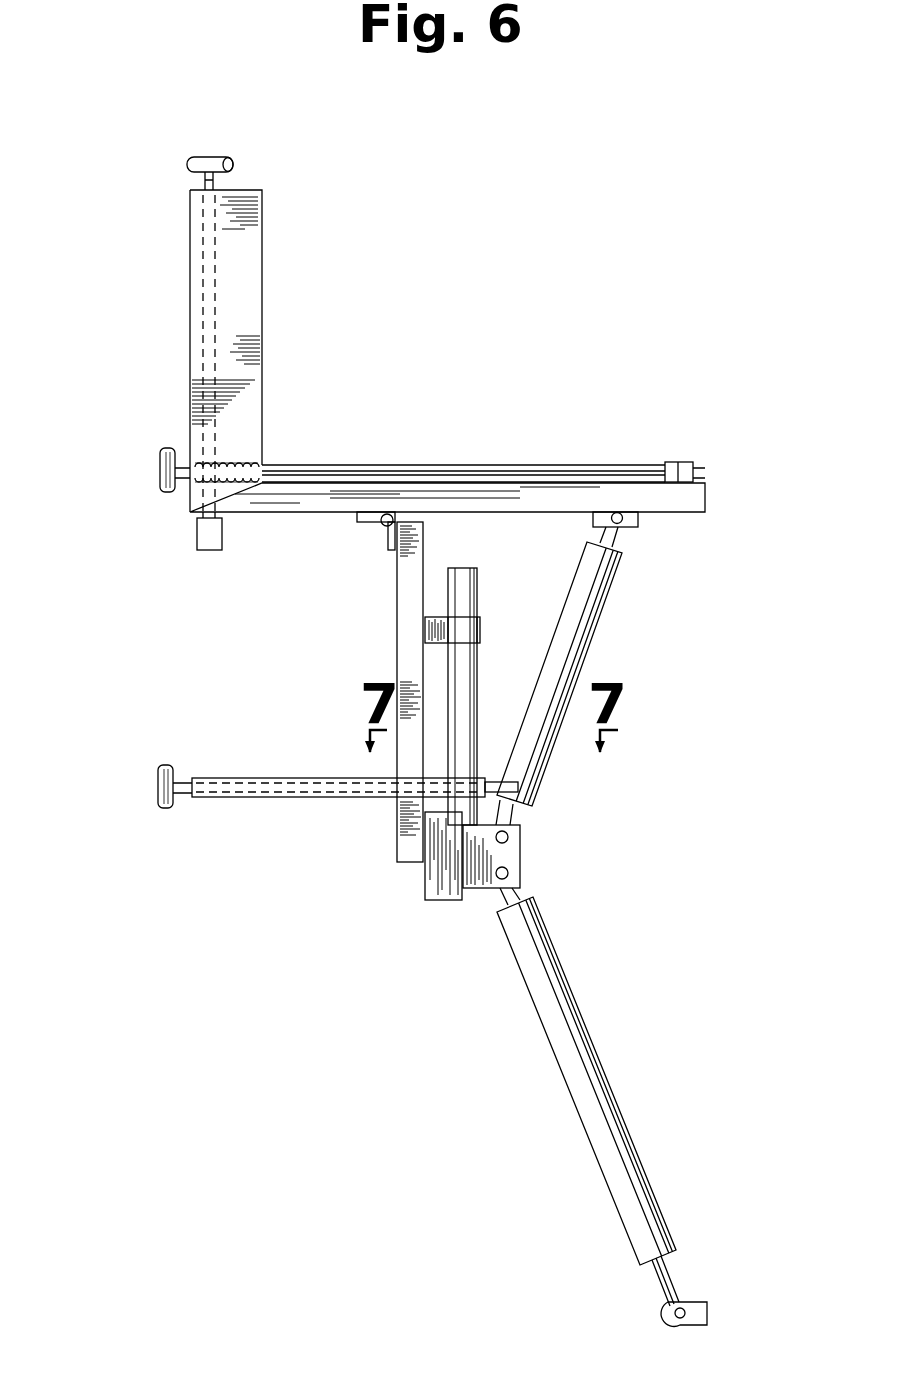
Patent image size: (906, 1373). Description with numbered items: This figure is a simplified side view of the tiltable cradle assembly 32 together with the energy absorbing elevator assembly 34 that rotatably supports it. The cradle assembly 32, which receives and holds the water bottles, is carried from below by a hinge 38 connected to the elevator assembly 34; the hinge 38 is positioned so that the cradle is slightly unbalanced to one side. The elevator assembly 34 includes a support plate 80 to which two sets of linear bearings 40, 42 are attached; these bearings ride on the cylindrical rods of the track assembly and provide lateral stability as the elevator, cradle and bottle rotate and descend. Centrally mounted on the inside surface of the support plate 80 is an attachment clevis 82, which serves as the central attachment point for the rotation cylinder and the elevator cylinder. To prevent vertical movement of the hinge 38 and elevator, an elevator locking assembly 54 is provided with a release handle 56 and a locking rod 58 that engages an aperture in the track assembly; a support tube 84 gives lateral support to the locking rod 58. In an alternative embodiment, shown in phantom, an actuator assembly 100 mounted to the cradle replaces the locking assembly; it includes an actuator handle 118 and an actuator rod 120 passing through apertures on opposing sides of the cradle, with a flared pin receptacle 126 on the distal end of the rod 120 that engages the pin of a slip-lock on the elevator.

The actuator assembly 100 is at (405, 326).
The actuator handle 118 is at (188, 162).
The actuator rod 120 is at (200, 320).
The flared pin receptacle 126 is at (197, 533).
The hinge 38 is at (392, 540).
The tiltable cradle assembly 32 is at (337, 715).
The elevator assembly 34 is at (384, 680).
The support plate 80 is at (395, 655).
The linear bearing 40 is at (503, 603).
The linear bearing 42 is at (478, 660).
The release handle 56 is at (165, 765).
The elevator locking assembly 54 is at (311, 794).
The support tube 84 is at (318, 800).
The attachment clevis 82 is at (425, 885).
The locking rod 58 is at (520, 803).